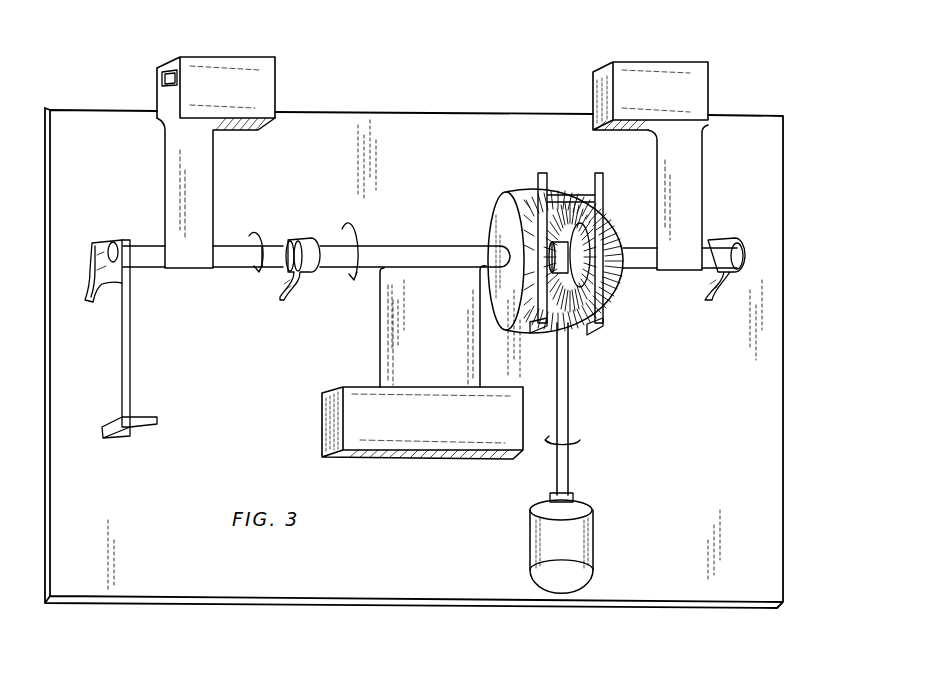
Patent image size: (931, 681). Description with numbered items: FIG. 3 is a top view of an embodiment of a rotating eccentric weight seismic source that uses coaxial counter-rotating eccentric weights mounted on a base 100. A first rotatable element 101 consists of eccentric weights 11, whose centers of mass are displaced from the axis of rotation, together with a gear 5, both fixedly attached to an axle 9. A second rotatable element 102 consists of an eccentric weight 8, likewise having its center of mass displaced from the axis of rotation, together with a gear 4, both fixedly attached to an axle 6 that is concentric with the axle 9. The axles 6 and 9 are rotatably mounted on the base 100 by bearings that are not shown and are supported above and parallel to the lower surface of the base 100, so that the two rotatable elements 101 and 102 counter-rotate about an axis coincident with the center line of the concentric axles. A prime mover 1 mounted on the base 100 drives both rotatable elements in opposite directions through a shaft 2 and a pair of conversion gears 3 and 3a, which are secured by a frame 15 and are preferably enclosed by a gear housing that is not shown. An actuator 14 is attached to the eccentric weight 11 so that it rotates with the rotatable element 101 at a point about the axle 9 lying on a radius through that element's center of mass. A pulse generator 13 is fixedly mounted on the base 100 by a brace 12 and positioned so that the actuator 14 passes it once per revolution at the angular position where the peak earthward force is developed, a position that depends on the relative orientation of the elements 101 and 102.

The prime mover 1 is at (545, 543).
The shaft 2 is at (563, 468).
The conversion gear 3 is at (550, 330).
The conversion gear 3a is at (572, 185).
The gear 4 is at (502, 317).
The gear 5 is at (620, 307).
The axle 6 is at (422, 250).
The eccentric weight 8 is at (437, 452).
The axle 9 is at (710, 250).
The eccentric weights 11 is at (237, 70).
The brace 12 is at (122, 360).
The pulse generator 13 is at (143, 423).
The actuator 14 is at (160, 78).
The frame 15 is at (548, 173).
The base 100 is at (767, 493).
The rotatable element 101 is at (577, 82).
The rotatable element 102 is at (390, 381).